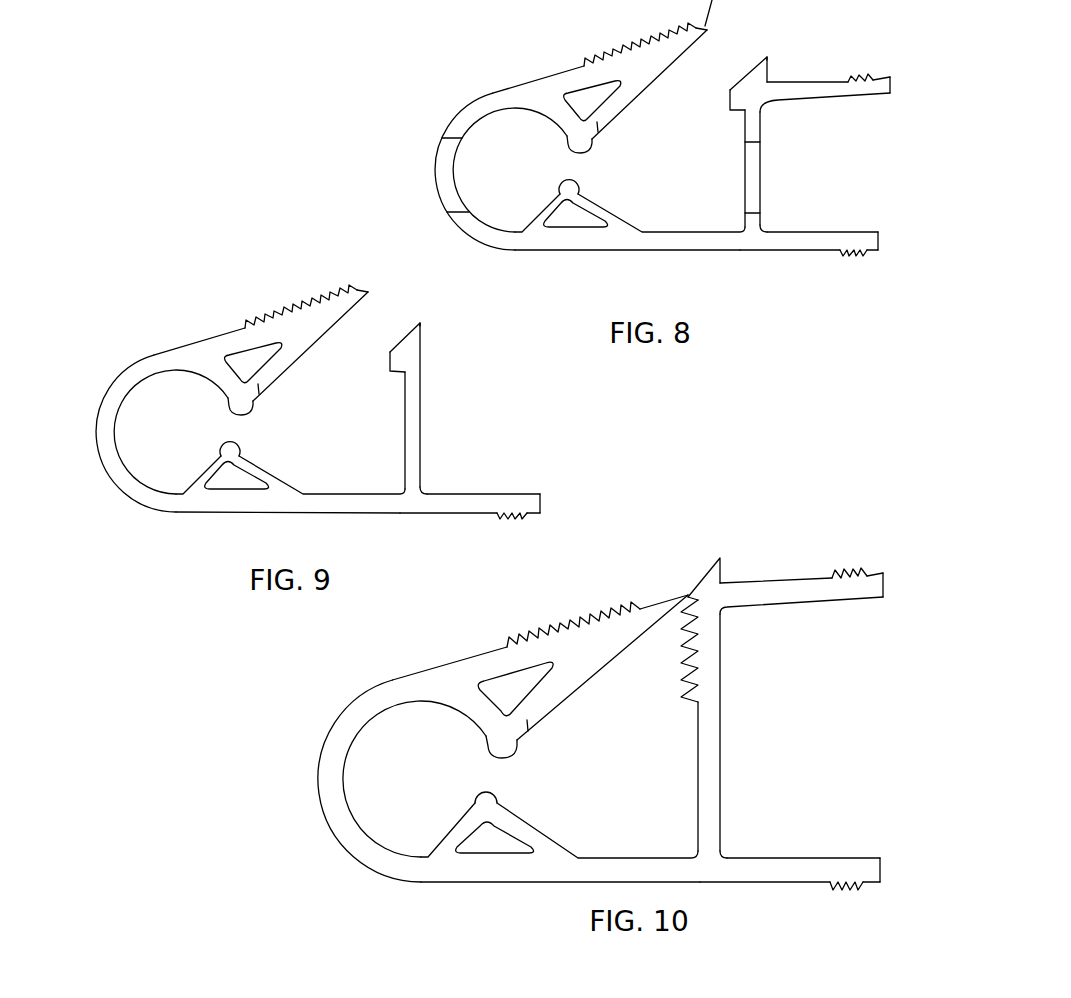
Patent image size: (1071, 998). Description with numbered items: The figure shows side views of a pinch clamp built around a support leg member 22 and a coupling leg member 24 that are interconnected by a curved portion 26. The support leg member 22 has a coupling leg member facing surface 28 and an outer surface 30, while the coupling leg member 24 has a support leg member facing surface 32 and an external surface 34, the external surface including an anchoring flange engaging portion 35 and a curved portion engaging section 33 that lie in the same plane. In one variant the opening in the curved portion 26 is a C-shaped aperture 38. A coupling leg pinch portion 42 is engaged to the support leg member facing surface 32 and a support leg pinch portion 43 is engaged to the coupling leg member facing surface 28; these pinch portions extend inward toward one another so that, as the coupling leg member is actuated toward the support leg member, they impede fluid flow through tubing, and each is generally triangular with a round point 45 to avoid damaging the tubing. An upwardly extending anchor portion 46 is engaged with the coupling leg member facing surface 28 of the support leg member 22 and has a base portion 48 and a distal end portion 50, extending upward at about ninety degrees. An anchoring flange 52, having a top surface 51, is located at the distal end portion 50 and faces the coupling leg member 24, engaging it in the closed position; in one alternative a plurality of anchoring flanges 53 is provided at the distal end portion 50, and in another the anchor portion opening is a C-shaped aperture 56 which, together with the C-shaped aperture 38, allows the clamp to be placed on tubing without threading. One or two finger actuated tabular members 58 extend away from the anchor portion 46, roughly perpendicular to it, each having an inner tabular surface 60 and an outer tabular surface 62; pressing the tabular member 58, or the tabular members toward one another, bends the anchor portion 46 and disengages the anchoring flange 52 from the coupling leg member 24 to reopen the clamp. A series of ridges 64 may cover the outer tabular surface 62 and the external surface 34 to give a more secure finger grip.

In FIG. 8, the support leg member 22 is at (728, 262).
In FIG. 9, the support leg member 22 is at (391, 525).
In FIG. 10, the support leg member 22 is at (712, 892).
In FIG. 8, the coupling leg member 24 is at (460, 92).
In FIG. 9, the coupling leg member 24 is at (112, 350).
In FIG. 10, the coupling leg member 24 is at (322, 712).
In FIG. 8, the curved portion 26 is at (430, 205).
In FIG. 9, the curved portion 26 is at (103, 482).
In FIG. 10, the curved portion 26 is at (310, 818).
In FIG. 8, the coupling leg member facing surface 28 is at (684, 231).
In FIG. 9, the coupling leg member facing surface 28 is at (335, 493).
In FIG. 10, the coupling leg member facing surface 28 is at (640, 857).
In FIG. 8, the outer surface 30 is at (655, 252).
In FIG. 9, the outer surface 30 is at (313, 514).
In FIG. 10, the outer surface 30 is at (558, 885).
In FIG. 8, the support leg member facing surface 32 is at (643, 100).
In FIG. 9, the support leg member facing surface 32 is at (300, 372).
In FIG. 10, the support leg member facing surface 32 is at (562, 708).
In FIG. 8, the curved portion engaging section 33 is at (560, 67).
In FIG. 9, the curved portion engaging section 33 is at (213, 337).
In FIG. 10, the curved portion engaging section 33 is at (457, 660).
In FIG. 8, the external surface 34 is at (518, 84).
In FIG. 9, the external surface 34 is at (178, 349).
In FIG. 10, the external surface 34 is at (413, 677).
In FIG. 8, the anchoring flange engaging portion 35 is at (701, 29).
In FIG. 9, the anchoring flange engaging portion 35 is at (358, 288).
In FIG. 10, the anchoring flange engaging portion 35 is at (662, 598).
In FIG. 8, the C-shaped aperture 38 is at (450, 168).
In FIG. 8, the coupling leg pinch portion 42 is at (595, 124).
In FIG. 9, the coupling leg pinch portion 42 is at (259, 388).
In FIG. 10, the coupling leg pinch portion 42 is at (529, 726).
In FIG. 8, the support leg pinch portion 43 is at (556, 212).
In FIG. 9, the support leg pinch portion 43 is at (218, 474).
In FIG. 10, the support leg pinch portion 43 is at (470, 833).
In FIG. 8, the round point 45 is at (575, 152).
In FIG. 9, the round point 45 is at (235, 414).
In FIG. 10, the round point 45 is at (503, 752).
In FIG. 8, the anchor portion 46 is at (730, 170).
In FIG. 9, the anchor portion 46 is at (395, 412).
In FIG. 10, the anchor portion 46 is at (686, 742).
In FIG. 8, the base portion 48 is at (764, 229).
In FIG. 9, the base portion 48 is at (425, 492).
In FIG. 10, the base portion 48 is at (722, 853).
In FIG. 8, the distal end portion 50 is at (762, 87).
In FIG. 9, the distal end portion 50 is at (420, 350).
In FIG. 10, the distal end portion 50 is at (725, 592).
In FIG. 8, the top surface 51 is at (750, 65).
In FIG. 9, the top surface 51 is at (413, 323).
In FIG. 8, the anchoring flange 52 is at (730, 92).
In FIG. 9, the anchoring flange 52 is at (393, 350).
In FIG. 10, the anchoring flange 52 is at (692, 592).
In FIG. 10, the anchoring flanges 53 is at (678, 620).
In FIG. 8, the C-shaped aperture 56 is at (760, 168).
In FIG. 8, the finger actuated tabular member 58 is at (892, 88).
In FIG. 9, the finger actuated tabular member 58 is at (542, 502).
In FIG. 10, the finger actuated tabular member 58 is at (884, 585).
In FIG. 8, the inner tabular surface 60 is at (835, 102).
In FIG. 9, the inner tabular surface 60 is at (483, 492).
In FIG. 10, the inner tabular surface 60 is at (807, 857).
In FIG. 8, the outer tabular surface 62 is at (805, 81).
In FIG. 9, the outer tabular surface 62 is at (450, 518).
In FIG. 10, the outer tabular surface 62 is at (773, 577).
In FIG. 8, the ridges 64 is at (614, 43).
In FIG. 9, the ridges 64 is at (279, 312).
In FIG. 10, the ridges 64 is at (548, 624).